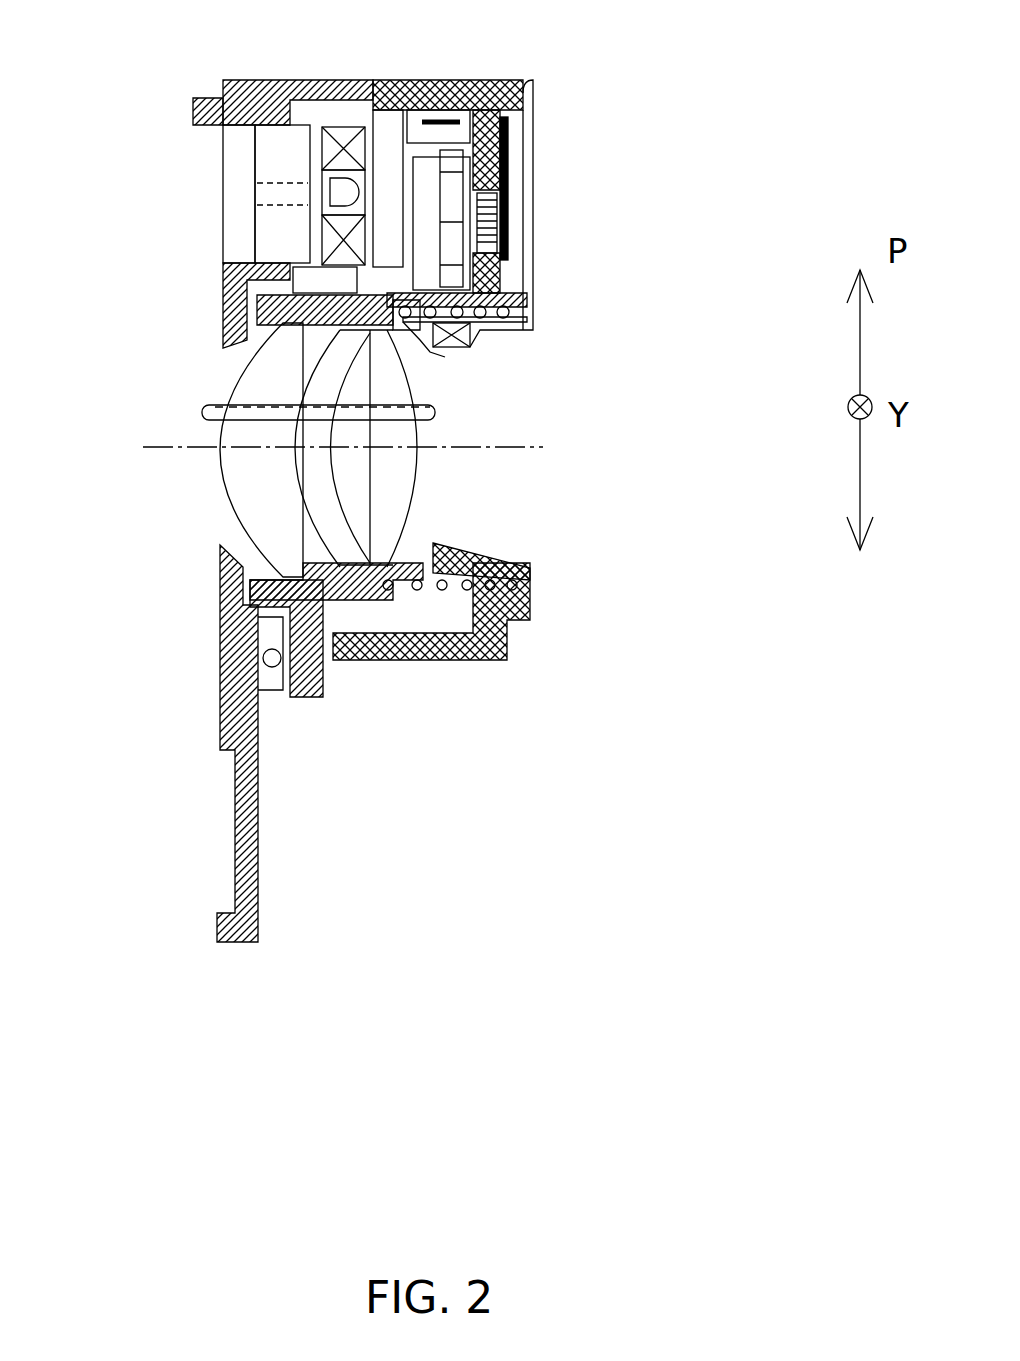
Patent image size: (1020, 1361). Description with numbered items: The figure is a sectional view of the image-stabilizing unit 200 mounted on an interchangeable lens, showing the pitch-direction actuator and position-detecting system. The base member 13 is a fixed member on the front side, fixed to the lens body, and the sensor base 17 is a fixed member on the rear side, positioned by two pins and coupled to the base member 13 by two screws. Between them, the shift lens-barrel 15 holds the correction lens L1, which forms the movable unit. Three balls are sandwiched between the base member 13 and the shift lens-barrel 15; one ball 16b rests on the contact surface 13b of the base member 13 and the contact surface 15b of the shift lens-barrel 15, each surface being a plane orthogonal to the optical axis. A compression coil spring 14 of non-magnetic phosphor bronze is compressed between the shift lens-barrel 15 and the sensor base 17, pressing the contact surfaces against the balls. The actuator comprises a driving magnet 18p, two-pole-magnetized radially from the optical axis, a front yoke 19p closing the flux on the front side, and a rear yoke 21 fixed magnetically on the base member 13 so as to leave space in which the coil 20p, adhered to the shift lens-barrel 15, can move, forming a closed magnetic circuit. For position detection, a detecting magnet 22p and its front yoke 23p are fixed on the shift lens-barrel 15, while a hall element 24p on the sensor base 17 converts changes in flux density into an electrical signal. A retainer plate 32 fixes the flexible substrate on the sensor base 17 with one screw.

The base member 13 is at (241, 153).
The contact surface 13b is at (222, 625).
The compression coil spring 14 is at (418, 592).
The shift lens-barrel 15 is at (400, 330).
The contact surface 15b is at (292, 708).
The ball 16b is at (262, 690).
The sensor base 17 is at (410, 80).
The driving magnet 18p is at (307, 79).
The yoke 19p is at (218, 97).
The coil 20p is at (340, 130).
The yoke 21 is at (510, 78).
The detecting magnet 22p is at (520, 100).
The yoke 23p is at (465, 347).
The hall element 24p is at (521, 238).
The retainer plate 32 is at (512, 133).
The image-stabilizing unit 200 is at (450, 847).
The correction lens L1 is at (202, 412).